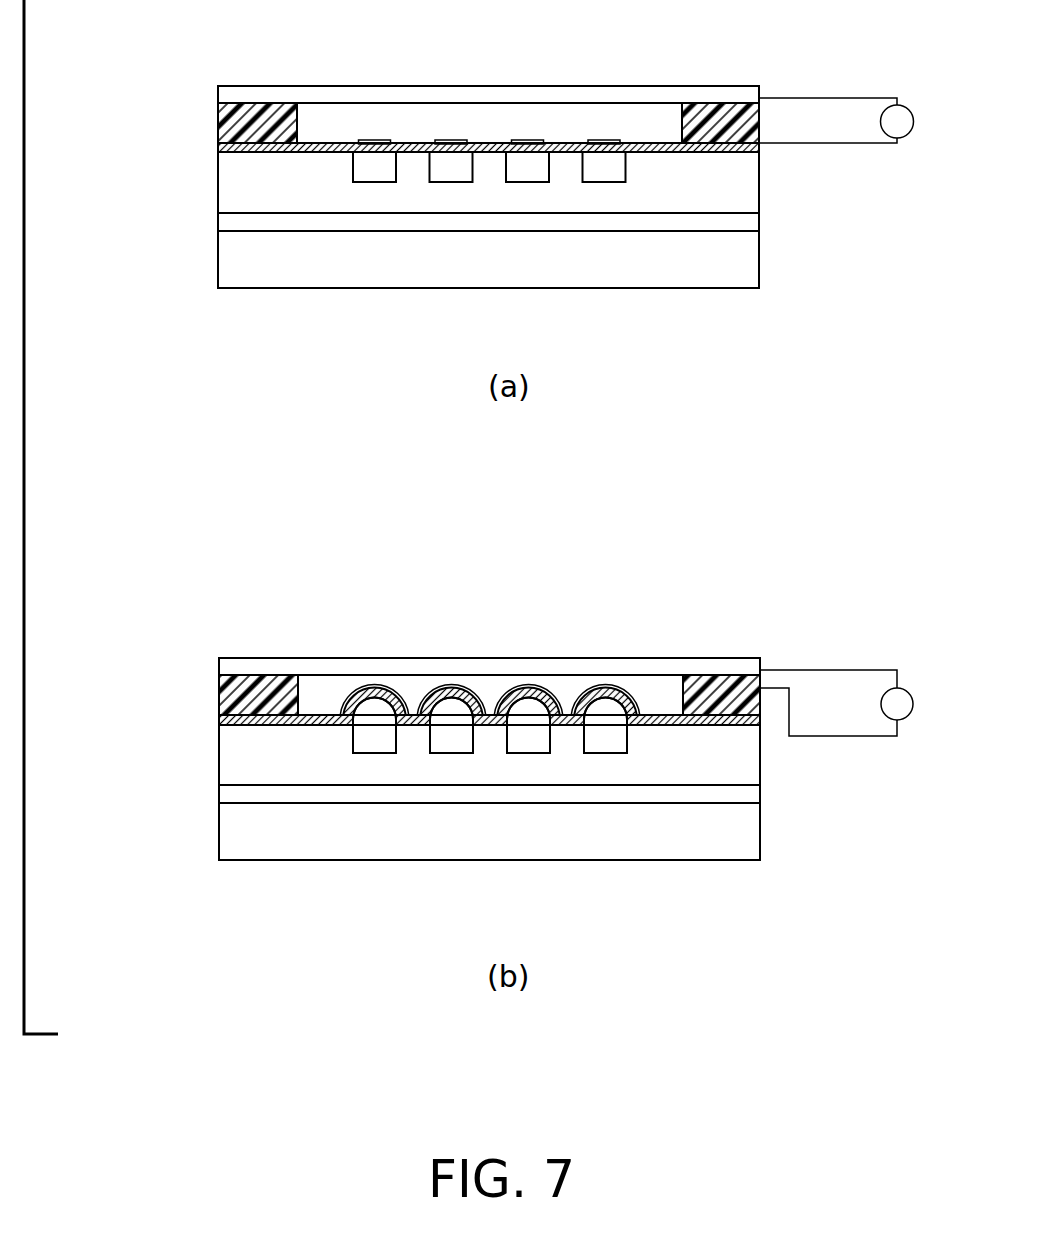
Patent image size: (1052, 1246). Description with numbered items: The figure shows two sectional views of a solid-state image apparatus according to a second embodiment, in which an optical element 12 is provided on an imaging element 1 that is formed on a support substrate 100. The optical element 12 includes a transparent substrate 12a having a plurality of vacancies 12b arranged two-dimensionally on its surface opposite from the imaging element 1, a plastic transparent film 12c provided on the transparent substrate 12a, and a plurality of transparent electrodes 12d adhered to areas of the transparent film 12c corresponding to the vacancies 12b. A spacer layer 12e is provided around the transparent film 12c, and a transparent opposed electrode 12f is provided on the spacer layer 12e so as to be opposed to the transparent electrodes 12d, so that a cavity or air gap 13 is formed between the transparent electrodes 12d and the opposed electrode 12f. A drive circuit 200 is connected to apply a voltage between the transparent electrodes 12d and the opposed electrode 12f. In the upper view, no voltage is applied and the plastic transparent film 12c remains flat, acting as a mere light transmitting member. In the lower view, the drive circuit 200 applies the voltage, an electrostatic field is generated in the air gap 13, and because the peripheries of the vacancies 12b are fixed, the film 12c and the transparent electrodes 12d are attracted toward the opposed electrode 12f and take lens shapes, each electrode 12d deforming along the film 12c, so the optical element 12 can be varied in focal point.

The optical element 12 is at (125, 57).
The transparent substrate 12a is at (233, 195).
The vacancies 12b is at (360, 167).
The plastic transparent film 12c is at (220, 148).
The transparent electrodes 12d is at (360, 140).
The spacer layer 12e is at (220, 112).
The transparent opposed electrode 12f is at (230, 93).
The cavity (air gap) 13 is at (424, 120).
The imaging element 1 is at (488, 222).
The support substrate 100 is at (563, 275).
The drive circuit 200 is at (877, 127).